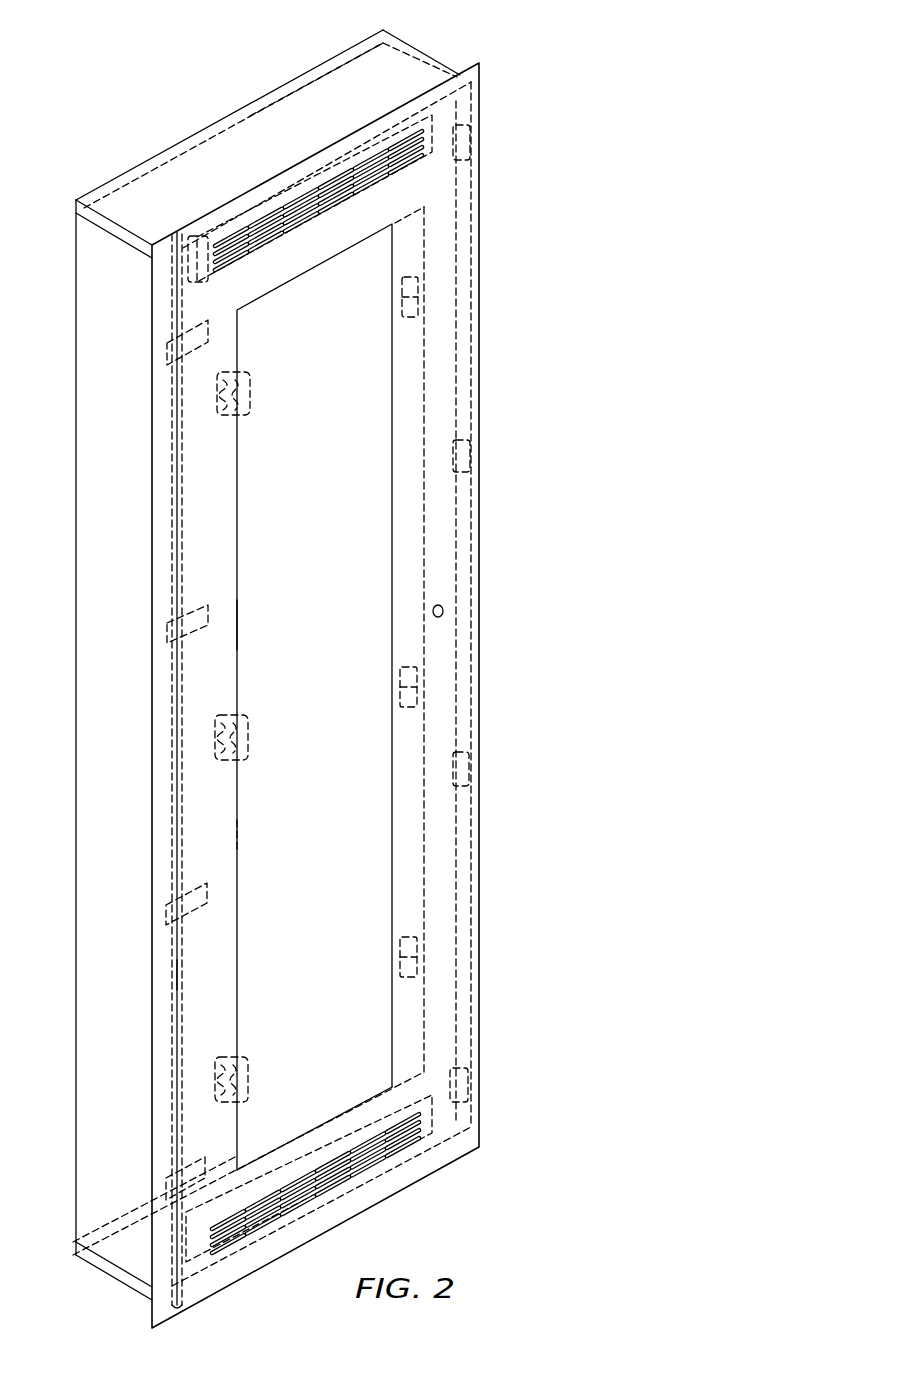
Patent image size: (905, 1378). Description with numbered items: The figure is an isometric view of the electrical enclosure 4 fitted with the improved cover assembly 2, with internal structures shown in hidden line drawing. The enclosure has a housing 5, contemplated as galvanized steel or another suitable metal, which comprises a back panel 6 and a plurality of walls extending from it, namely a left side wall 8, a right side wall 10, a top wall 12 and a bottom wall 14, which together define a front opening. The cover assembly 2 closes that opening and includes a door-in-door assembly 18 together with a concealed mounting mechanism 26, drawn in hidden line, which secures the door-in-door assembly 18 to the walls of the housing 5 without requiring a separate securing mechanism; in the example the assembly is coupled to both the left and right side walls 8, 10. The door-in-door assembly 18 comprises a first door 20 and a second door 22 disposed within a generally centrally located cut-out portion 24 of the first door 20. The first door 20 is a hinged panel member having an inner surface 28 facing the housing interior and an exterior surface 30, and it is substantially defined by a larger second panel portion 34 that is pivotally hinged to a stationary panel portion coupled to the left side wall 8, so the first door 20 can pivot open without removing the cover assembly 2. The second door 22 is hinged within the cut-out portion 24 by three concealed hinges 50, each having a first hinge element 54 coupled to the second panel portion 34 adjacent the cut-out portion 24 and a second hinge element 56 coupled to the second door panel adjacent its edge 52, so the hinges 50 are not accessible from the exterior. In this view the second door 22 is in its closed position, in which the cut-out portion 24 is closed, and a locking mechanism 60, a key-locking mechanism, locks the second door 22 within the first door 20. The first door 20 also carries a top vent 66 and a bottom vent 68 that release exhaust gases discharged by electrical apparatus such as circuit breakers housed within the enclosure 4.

The cover assembly 2 is at (125, 413).
The electrical enclosure 4 is at (499, 1216).
The housing 5 is at (130, 185).
The back panel 6 is at (190, 136).
The left side wall 8 is at (85, 250).
The right side wall 10 is at (426, 54).
The top wall 12 is at (290, 94).
The bottom wall 14 is at (103, 1274).
The door-in-door assembly 18 is at (248, 488).
The first door 20 is at (192, 870).
The second door 22 is at (361, 954).
The cut-out portion 24 is at (405, 878).
The concealed mounting mechanism 26 is at (496, 136).
The inner surface 28 is at (255, 832).
The exterior surface 30 is at (440, 985).
The second panel portion 34 is at (192, 972).
The hinges 50 is at (264, 351).
The edge 52 is at (240, 626).
The first hinge element 54 is at (226, 428).
The second hinge element 56 is at (250, 392).
The locking mechanism 60 is at (444, 608).
The top vent 66 is at (346, 176).
The bottom vent 68 is at (370, 1140).